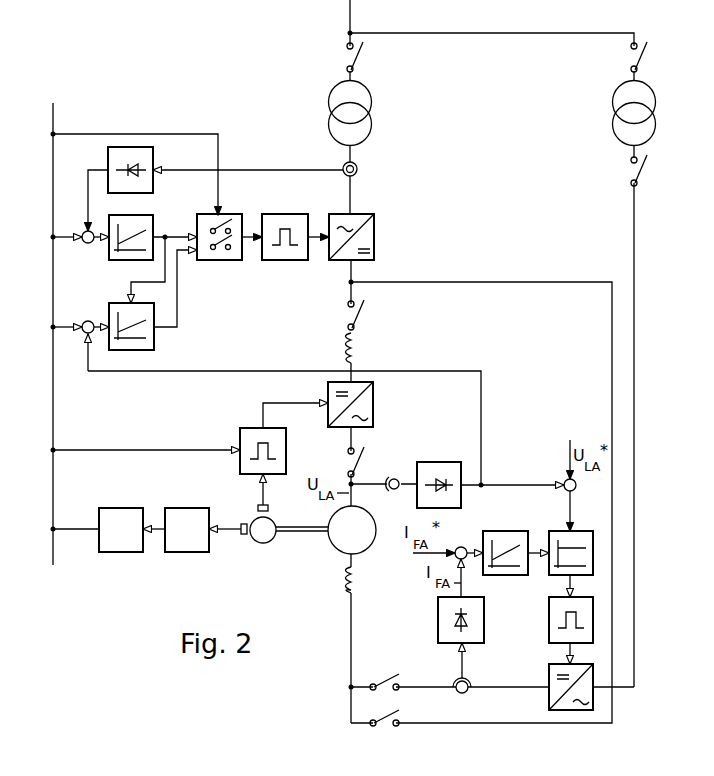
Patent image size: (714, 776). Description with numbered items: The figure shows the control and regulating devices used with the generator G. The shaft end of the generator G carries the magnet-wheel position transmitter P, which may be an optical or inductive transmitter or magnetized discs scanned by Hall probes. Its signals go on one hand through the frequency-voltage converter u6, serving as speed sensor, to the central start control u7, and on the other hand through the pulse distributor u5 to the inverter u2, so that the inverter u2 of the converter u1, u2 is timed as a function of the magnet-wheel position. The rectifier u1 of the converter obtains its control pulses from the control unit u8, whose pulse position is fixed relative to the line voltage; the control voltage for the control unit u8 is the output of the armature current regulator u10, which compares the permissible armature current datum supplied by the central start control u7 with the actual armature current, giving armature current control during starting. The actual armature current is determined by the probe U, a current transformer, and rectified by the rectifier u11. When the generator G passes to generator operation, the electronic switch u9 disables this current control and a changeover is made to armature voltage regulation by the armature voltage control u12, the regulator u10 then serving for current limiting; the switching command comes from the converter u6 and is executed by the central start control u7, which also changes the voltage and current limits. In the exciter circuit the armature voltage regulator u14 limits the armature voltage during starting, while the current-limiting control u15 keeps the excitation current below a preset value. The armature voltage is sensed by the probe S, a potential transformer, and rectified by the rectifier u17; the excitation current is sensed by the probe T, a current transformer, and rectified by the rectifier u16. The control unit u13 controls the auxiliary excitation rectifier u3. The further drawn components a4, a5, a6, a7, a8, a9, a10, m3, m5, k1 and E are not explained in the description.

The circuit breaker a4 is at (354, 60).
The circuit breaker a5 is at (355, 464).
The circuit breaker a6 is at (355, 318).
The circuit breaker a7 is at (638, 60).
The circuit breaker a8 is at (638, 173).
The switch a9 is at (385, 716).
The switch a10 is at (384, 676).
The transformer m3 is at (329, 120).
The transformer m5 is at (613, 120).
The smoothing reactor k1 is at (354, 349).
The rectifier u1 is at (374, 237).
The inverter u2 is at (373, 406).
The auxiliary excitation rectifier u3 is at (549, 700).
The pulse distributor u5 is at (240, 463).
The frequency-voltage converter u6 is at (176, 552).
The central start control u7 is at (110, 552).
The control unit u8 is at (278, 260).
The electronic switch u9 is at (214, 260).
The armature current regulator u10 is at (153, 222).
The rectifier u11 is at (153, 157).
The armature voltage control u12 is at (154, 345).
The control unit u13 is at (549, 630).
The armature voltage regulator u14 is at (588, 531).
The current-limiting control u15 is at (500, 531).
The rectifier u16 is at (484, 620).
The rectifier u17 is at (437, 462).
The probe U is at (357, 170).
The probe S is at (392, 494).
The generator G is at (352, 530).
The magnet-wheel position transmitter P is at (258, 542).
The exciter winding E is at (355, 584).
The probe T is at (467, 695).